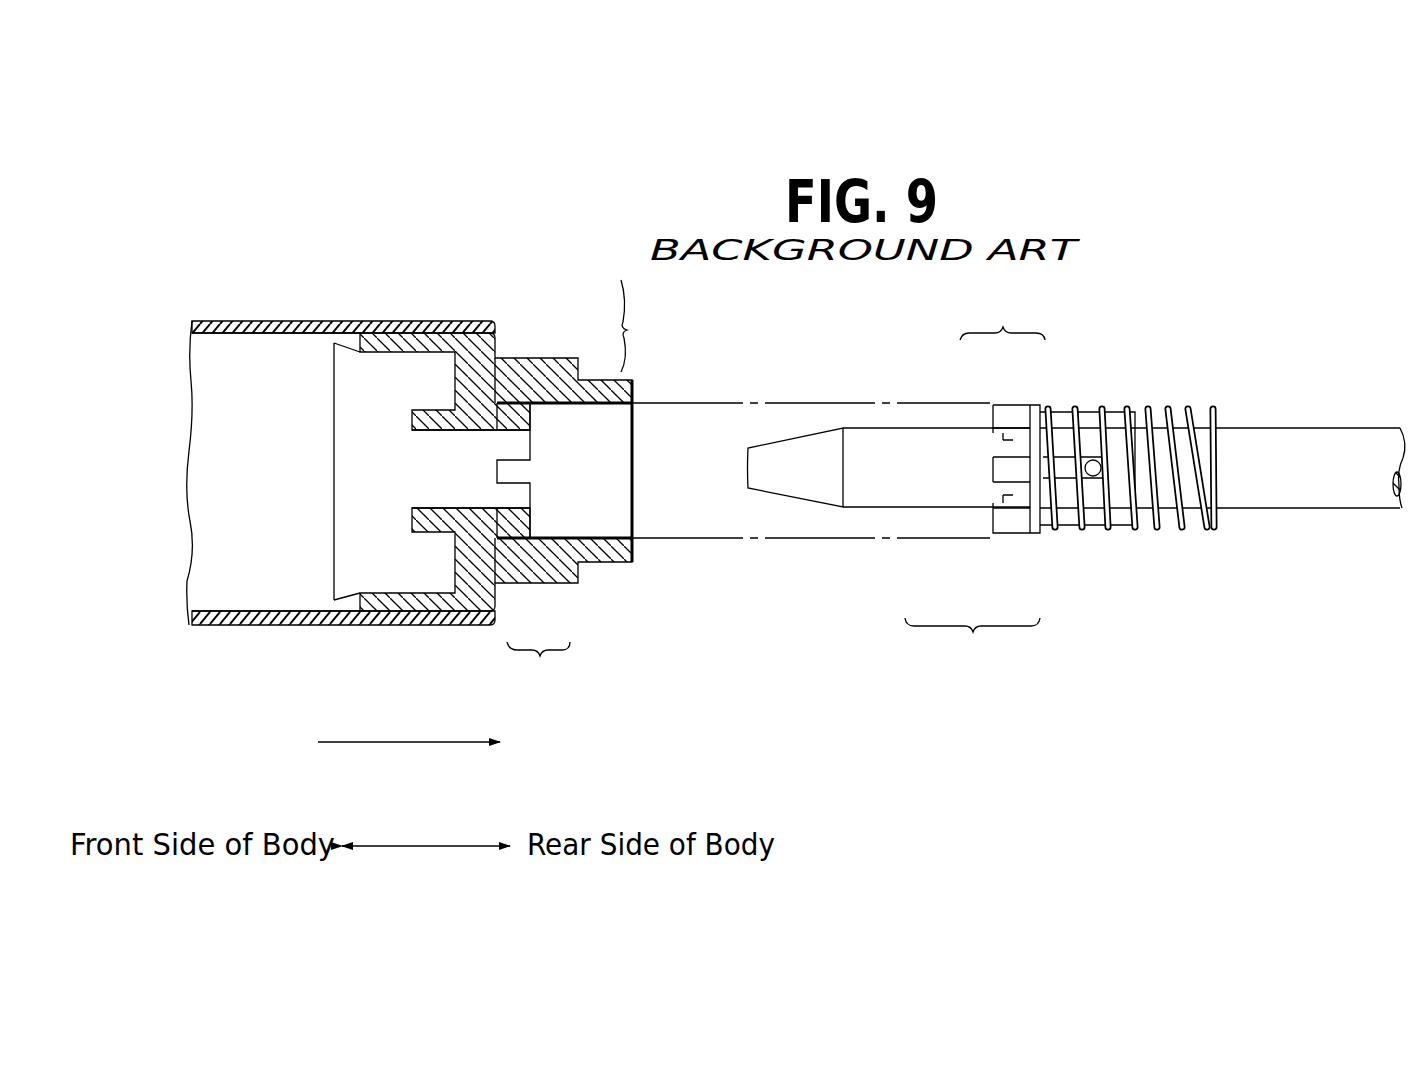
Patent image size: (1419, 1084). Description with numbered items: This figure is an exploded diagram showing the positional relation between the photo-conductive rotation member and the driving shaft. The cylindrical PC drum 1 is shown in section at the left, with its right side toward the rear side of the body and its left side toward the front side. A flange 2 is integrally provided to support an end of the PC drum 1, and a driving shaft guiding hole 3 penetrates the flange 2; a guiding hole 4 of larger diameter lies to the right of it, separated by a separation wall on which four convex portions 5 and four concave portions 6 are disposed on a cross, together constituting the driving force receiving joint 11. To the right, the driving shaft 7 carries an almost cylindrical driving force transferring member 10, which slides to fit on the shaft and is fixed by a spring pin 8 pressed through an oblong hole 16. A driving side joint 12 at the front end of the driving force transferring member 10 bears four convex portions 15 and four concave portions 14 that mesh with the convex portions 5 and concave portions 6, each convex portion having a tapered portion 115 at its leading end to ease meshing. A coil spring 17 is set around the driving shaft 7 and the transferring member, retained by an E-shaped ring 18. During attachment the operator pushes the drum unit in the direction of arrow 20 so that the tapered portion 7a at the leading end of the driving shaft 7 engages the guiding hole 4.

The PC drum 1 is at (238, 322).
The flange 2 is at (520, 376).
The driving shaft guiding hole 3 is at (440, 433).
The guiding hole 4 is at (608, 539).
The convex portions 5 is at (521, 447).
The concave portions 6 is at (517, 417).
The driving shaft 7 is at (1303, 500).
The tapered portion 7a is at (794, 500).
The spring pin 8 is at (1102, 453).
The driving force transferring member 10 is at (1048, 376).
The driving force receiving joint 11 is at (538, 669).
The driving side joint 12 is at (975, 486).
The concave portions 14 is at (993, 422).
The convex portions 15 is at (1010, 416).
The oblong hole 16 is at (1068, 530).
The coil spring 17 is at (1167, 420).
The E-shaped ring 18 is at (1213, 532).
The arrow 20 is at (410, 743).
The tapered portion 115 is at (1012, 440).